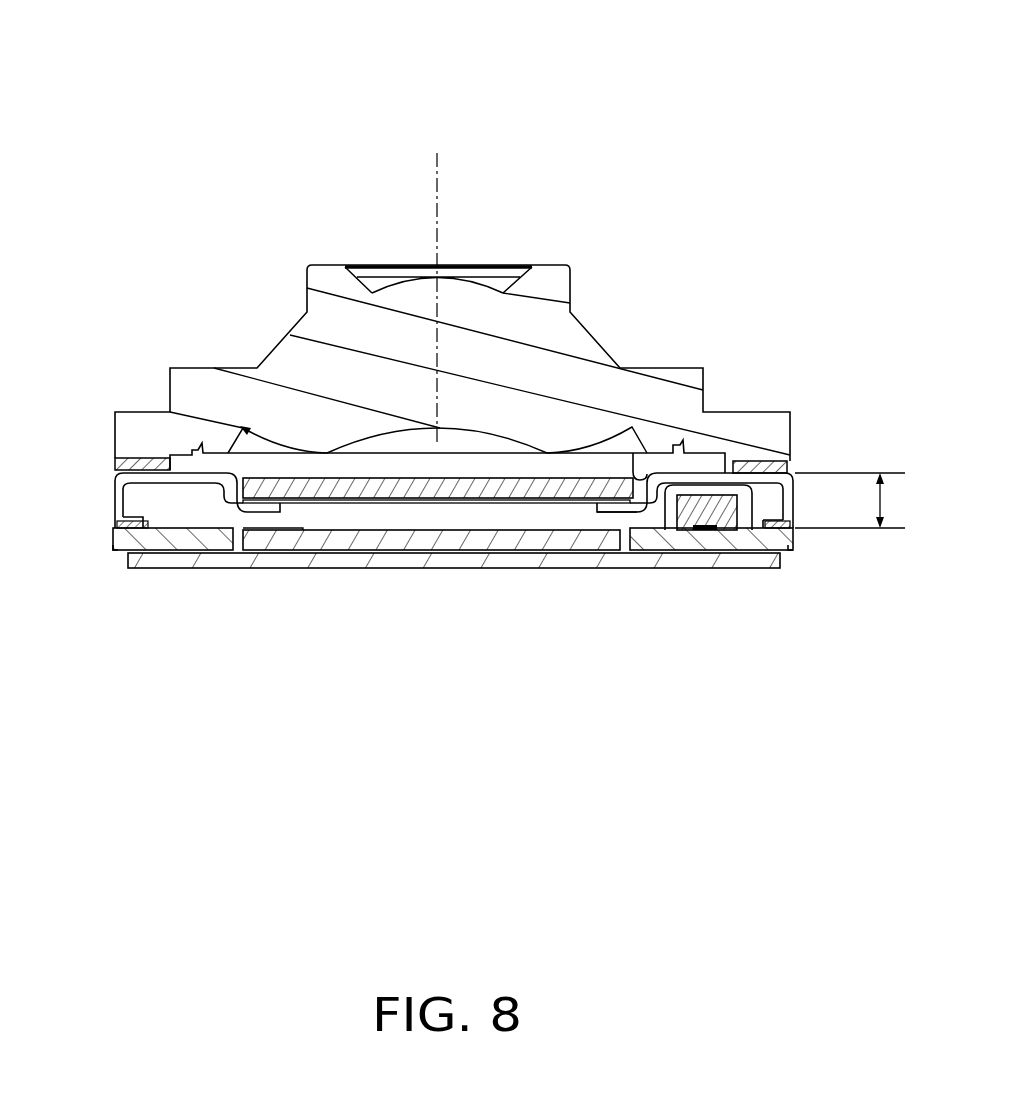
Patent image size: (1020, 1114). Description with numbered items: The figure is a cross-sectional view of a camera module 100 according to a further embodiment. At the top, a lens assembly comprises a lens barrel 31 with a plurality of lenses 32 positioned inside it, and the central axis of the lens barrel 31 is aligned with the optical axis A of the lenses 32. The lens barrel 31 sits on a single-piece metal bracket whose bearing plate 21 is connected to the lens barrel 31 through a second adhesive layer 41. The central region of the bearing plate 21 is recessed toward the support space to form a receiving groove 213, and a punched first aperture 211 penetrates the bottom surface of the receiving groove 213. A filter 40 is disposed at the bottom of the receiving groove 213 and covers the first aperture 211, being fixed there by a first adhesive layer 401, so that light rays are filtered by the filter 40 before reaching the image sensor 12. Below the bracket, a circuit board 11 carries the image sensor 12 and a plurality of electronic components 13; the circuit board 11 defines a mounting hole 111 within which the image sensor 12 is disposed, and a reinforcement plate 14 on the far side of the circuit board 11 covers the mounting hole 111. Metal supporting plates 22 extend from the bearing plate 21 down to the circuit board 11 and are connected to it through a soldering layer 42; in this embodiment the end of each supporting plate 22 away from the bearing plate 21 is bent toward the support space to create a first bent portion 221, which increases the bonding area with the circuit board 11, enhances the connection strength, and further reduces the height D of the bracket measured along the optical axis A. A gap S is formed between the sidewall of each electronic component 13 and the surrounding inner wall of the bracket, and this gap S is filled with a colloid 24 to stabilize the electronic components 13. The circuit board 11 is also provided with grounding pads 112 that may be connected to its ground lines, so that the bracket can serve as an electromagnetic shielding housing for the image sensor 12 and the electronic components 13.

The camera module 100 is at (520, 49).
The optical axis A is at (437, 285).
The lens barrel 31 is at (326, 262).
The lenses 32 is at (448, 295).
The bearing plate 21 is at (166, 474).
The receiving groove 213 is at (623, 476).
The mounting hole 111 is at (703, 458).
The second adhesive layer 41 is at (115, 463).
The supporting plates 22 is at (117, 499).
The first bent portion 221 is at (128, 522).
The first aperture 211 is at (593, 517).
The soldering layer 42 is at (118, 526).
The filter 40 is at (387, 504).
The first adhesive layer 401 is at (263, 502).
The circuit board 11 is at (175, 540).
The grounding pads 112 is at (118, 541).
The image sensor 12 is at (438, 540).
The reinforcement plate 14 is at (490, 560).
The colloid 24 is at (668, 488).
The electronic components 13 is at (697, 523).
The gap S is at (742, 484).
The height D is at (850, 500).